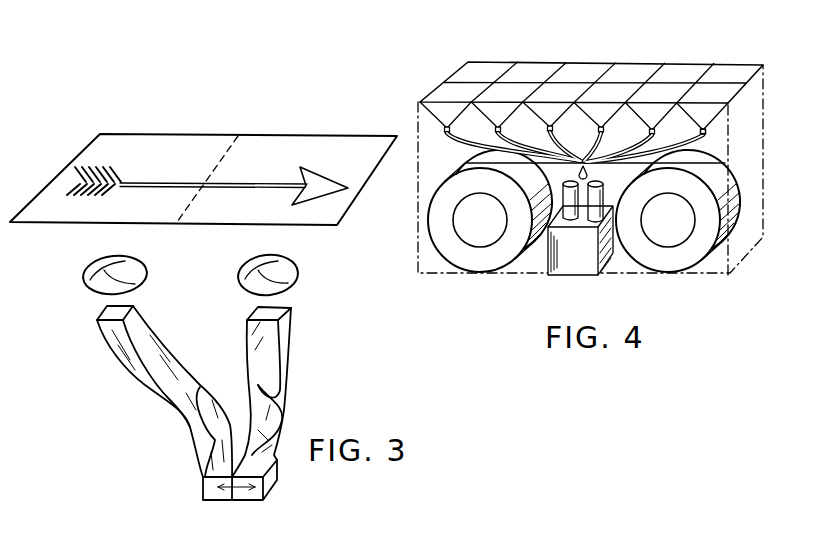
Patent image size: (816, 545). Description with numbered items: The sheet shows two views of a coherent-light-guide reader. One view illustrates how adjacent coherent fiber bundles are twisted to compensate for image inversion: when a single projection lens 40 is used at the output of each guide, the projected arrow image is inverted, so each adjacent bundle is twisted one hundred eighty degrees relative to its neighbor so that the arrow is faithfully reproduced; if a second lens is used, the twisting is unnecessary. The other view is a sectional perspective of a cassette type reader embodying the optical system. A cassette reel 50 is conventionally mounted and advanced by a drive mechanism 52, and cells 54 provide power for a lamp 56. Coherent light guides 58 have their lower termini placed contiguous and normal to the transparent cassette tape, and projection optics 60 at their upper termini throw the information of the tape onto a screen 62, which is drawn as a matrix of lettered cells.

In FIG. 3, the projection lens 40 is at (146, 275).
In FIG. 4, the cassette reel 50 is at (492, 260).
In FIG. 4, the drive mechanism 52 is at (583, 258).
In FIG. 4, the cells 54 is at (570, 222).
In FIG. 4, the lamp 56 is at (588, 174).
In FIG. 4, the coherent light guides 58 is at (442, 138).
In FIG. 4, the projection optics 60 is at (706, 134).
In FIG. 4, the screen 62 is at (602, 68).